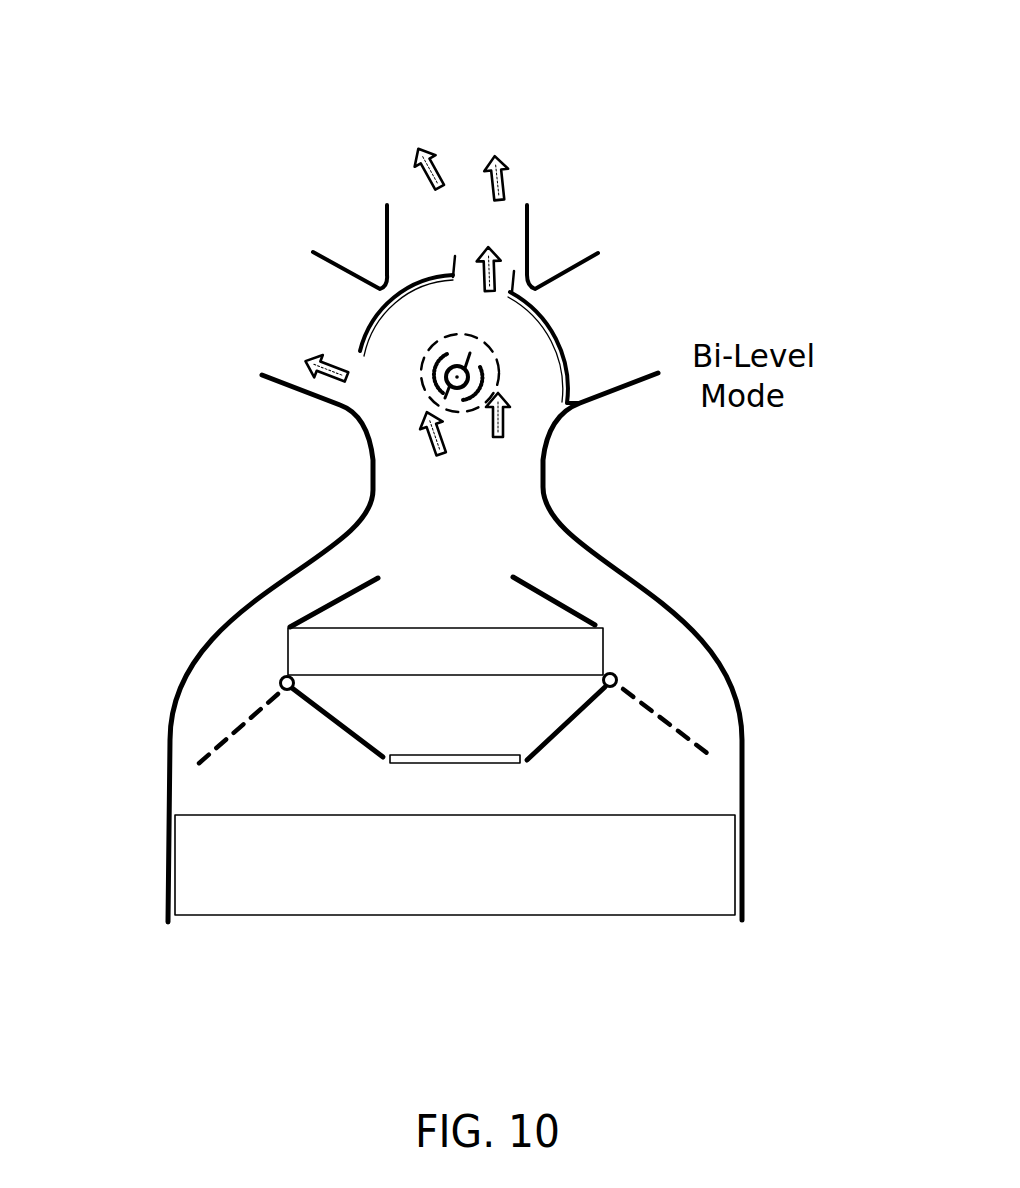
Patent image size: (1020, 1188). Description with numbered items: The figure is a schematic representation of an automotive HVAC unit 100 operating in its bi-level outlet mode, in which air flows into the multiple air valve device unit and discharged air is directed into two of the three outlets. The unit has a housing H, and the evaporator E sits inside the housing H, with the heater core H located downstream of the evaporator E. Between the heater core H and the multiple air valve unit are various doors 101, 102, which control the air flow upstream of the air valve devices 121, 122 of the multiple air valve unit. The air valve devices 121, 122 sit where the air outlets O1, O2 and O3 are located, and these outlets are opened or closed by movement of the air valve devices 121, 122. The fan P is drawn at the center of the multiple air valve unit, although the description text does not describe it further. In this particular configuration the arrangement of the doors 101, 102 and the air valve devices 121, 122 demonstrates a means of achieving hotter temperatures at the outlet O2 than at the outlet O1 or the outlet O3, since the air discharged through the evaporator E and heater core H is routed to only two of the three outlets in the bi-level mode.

The automotive HVAC unit 100 is at (717, 958).
The door 101 is at (330, 723).
The door 102 is at (330, 593).
The air valve device 121 is at (558, 333).
The air valve device 122 is at (360, 332).
The housing H is at (593, 649).
The evaporator E is at (502, 897).
The blower fan P is at (480, 337).
The air outlet O1 is at (457, 152).
The air outlet O2 is at (588, 327).
The air outlet O3 is at (277, 350).